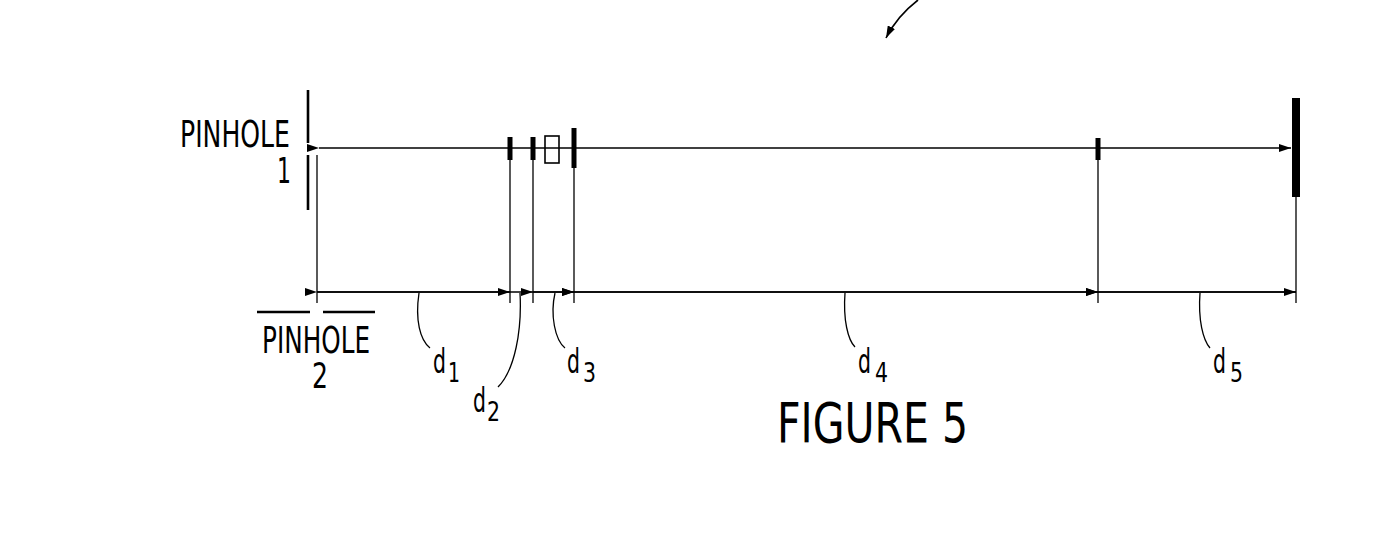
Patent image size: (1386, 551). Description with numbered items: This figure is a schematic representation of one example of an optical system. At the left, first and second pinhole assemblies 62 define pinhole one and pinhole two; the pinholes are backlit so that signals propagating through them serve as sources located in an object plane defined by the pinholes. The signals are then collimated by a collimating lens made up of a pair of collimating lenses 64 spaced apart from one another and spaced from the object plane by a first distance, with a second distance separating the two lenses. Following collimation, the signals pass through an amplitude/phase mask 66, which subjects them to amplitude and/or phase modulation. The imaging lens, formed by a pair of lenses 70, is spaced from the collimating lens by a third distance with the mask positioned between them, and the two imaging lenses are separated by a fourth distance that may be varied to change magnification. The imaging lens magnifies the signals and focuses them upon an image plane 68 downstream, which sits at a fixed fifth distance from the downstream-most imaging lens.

The pinhole assemblies 62 is at (310, 110).
The collimating lenses 64 is at (507, 145).
The amplitude/phase mask 66 is at (551, 137).
The image plane 68 is at (1300, 115).
The imaging lenses 70 is at (578, 128).